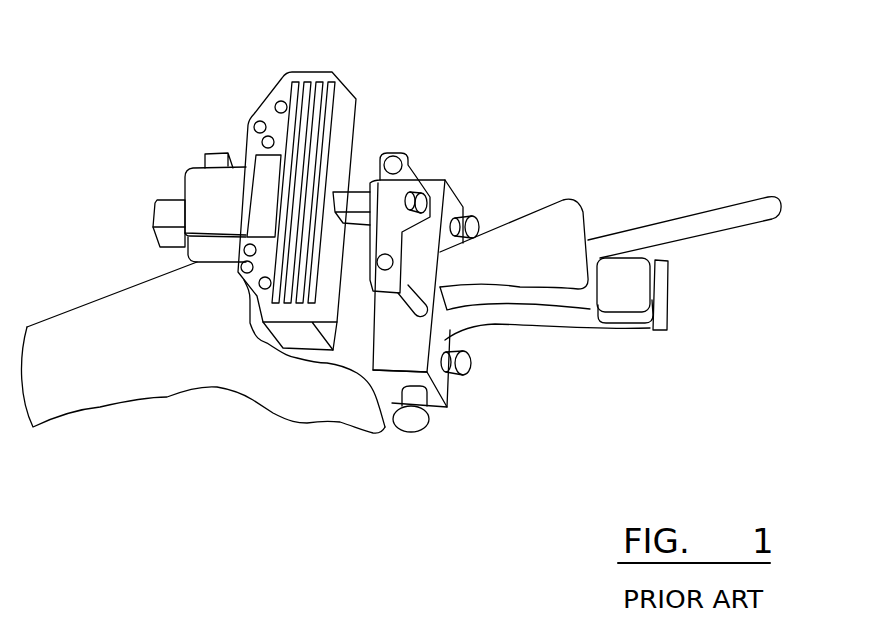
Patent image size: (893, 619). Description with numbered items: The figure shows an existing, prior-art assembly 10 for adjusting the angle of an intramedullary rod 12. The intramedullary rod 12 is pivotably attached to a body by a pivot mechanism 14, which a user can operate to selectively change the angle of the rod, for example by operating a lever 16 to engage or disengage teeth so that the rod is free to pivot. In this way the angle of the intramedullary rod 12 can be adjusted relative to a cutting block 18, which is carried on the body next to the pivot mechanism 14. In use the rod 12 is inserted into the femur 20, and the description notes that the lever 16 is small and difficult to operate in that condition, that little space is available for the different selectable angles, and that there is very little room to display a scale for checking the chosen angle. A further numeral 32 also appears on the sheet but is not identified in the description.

The existing assembly 10 is at (624, 172).
The intramedullary rod 12 is at (720, 222).
The pivot mechanism 14 is at (492, 262).
The lever 16 is at (627, 287).
The cutting block 18 is at (345, 121).
The femur 20 is at (123, 343).
The stray reference numeral 32 is at (46, 612).